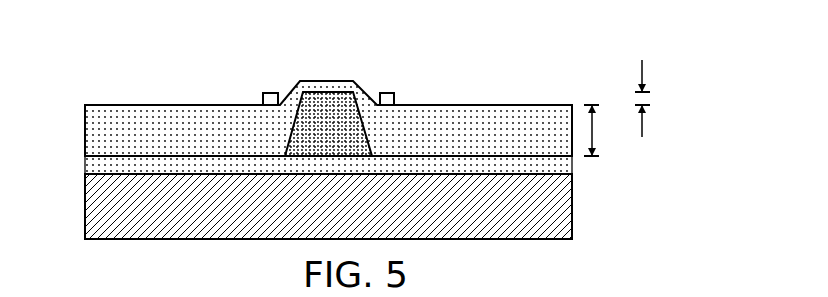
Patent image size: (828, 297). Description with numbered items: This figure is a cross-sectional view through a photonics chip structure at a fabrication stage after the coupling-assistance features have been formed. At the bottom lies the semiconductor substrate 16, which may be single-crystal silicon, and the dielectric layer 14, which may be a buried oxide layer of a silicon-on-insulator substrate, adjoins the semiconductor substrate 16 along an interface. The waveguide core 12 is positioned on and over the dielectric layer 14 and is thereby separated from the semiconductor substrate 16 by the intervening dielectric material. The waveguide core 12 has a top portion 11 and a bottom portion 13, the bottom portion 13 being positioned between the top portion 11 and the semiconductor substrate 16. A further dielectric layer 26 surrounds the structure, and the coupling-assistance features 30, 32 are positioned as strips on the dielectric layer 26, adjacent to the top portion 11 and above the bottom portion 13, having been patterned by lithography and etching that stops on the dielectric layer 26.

The top portion 11 is at (658, 98).
The waveguide core 12 is at (333, 110).
The bottom portion 13 is at (606, 130).
The dielectric layer 14 is at (517, 168).
The semiconductor substrate 16 is at (518, 210).
The dielectric layer 26 is at (128, 140).
The coupling-assistance feature 30 is at (265, 97).
The coupling-assistance feature 32 is at (393, 97).